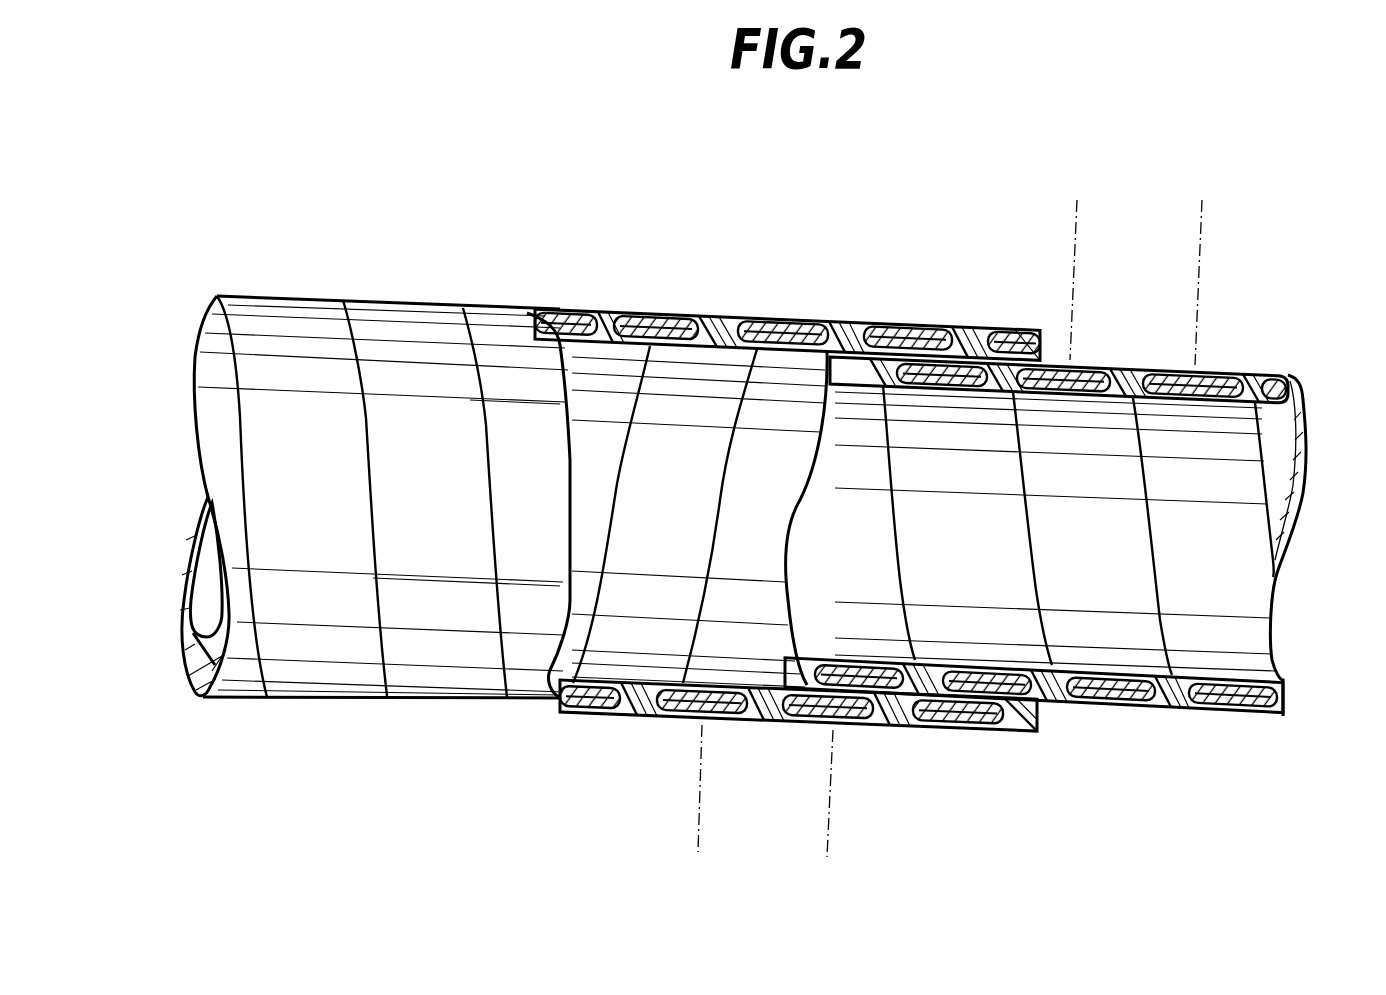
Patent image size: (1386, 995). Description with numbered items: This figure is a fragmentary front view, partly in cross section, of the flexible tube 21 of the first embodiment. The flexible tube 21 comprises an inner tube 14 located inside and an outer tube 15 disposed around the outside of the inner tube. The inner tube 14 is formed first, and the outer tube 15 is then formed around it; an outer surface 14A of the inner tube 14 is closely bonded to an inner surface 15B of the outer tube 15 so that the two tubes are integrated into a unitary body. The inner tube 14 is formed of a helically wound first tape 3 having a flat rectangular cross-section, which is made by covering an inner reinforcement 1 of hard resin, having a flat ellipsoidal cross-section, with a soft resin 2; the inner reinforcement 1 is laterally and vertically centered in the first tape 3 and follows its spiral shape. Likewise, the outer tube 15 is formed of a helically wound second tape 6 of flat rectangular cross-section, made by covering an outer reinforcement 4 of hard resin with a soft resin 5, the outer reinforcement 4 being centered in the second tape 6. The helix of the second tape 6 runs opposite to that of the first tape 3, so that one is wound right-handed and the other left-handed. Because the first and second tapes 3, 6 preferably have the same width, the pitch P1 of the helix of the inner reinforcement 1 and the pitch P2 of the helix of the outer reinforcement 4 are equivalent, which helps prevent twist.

The inner reinforcement 1 is at (1063, 380).
The soft resin 2 is at (1128, 383).
The first tape 3 is at (1073, 311).
The outer reinforcement 4 is at (783, 333).
The soft resin 5 is at (846, 337).
The second tape 6 is at (787, 260).
The inner tube 14 is at (1081, 529).
The outer surface of the inner tube 14A is at (1111, 688).
The outer tube 15 is at (798, 500).
The inner surface of the outer tube 15B is at (1020, 714).
The flexible tube 21 is at (455, 286).
The pitch of the helix of the inner reinforcement P1 is at (1077, 210).
The pitch of the helix of the outer reinforcement P2 is at (698, 842).